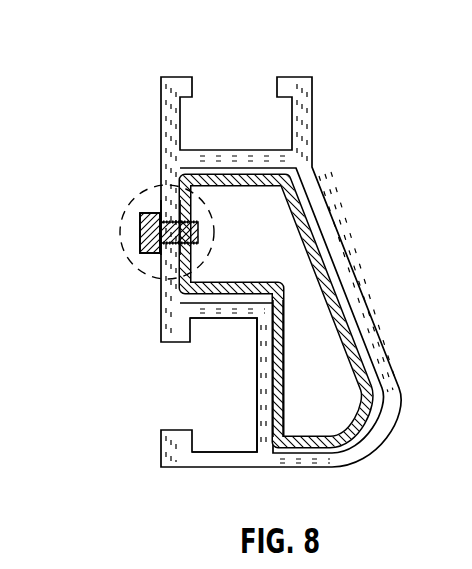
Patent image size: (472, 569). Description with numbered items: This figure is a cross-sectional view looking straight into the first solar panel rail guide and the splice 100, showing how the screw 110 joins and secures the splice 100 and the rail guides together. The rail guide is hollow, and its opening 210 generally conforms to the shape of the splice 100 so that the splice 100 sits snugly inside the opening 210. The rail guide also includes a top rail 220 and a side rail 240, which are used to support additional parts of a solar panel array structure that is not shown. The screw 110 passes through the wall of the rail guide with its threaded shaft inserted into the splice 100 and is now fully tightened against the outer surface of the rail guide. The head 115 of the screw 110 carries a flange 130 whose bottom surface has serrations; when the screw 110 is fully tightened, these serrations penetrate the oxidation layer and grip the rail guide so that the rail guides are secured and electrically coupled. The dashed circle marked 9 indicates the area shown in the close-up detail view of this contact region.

The top rail 220 is at (235, 122).
The opening 210 is at (312, 222).
The splice 100 is at (277, 385).
The side rail 240 is at (223, 423).
The flange 130 is at (157, 206).
The screw 110 is at (130, 234).
The head 115 is at (141, 257).
The detail circle 9 is at (138, 197).